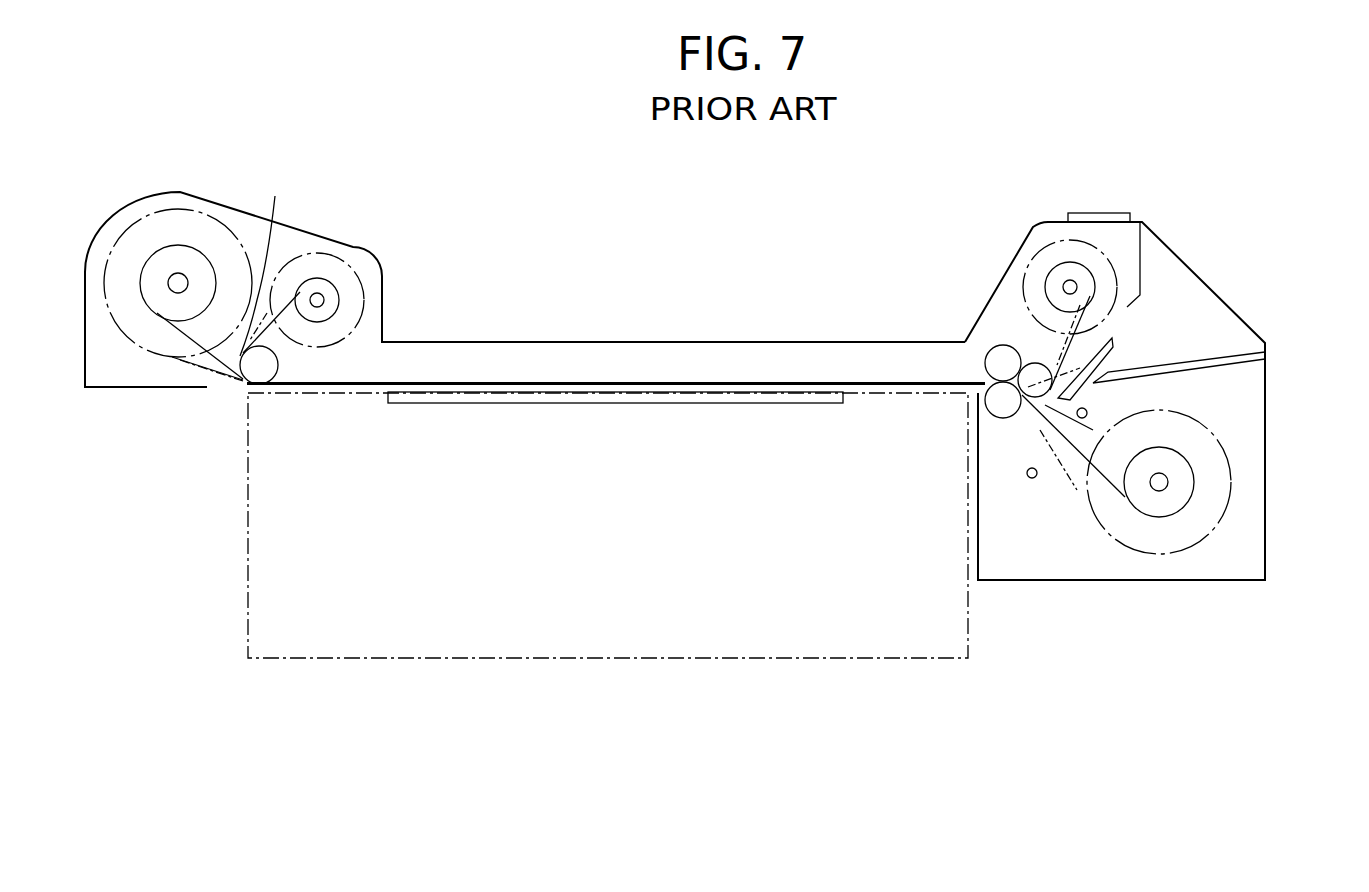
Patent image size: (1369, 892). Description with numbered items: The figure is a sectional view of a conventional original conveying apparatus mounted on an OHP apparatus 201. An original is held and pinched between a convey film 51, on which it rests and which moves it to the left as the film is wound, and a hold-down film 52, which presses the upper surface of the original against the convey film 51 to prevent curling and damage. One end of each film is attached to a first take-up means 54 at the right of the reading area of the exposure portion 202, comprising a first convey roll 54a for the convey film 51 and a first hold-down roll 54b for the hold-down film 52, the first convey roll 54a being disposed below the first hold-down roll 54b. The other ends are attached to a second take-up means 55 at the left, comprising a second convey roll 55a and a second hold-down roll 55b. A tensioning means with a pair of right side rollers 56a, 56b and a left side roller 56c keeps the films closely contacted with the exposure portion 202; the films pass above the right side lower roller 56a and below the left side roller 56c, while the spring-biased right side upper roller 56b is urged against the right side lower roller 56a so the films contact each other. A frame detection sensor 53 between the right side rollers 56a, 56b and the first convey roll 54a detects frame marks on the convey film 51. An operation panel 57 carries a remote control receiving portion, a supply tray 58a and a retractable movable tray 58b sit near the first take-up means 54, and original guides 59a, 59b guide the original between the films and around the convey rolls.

The convey film 51 is at (1070, 458).
The hold-down film 52 is at (1087, 333).
The frame detection sensor 53 is at (1027, 473).
The first take-up means 54 is at (1138, 562).
The first convey roll 54a is at (1183, 481).
The first hold-down roll 54b is at (1053, 278).
The second take-up means 55 is at (125, 362).
The second convey roll 55a is at (187, 262).
The second hold-down roll 55b is at (333, 293).
The right side lower roller 56a is at (998, 405).
The right side upper roller 56b is at (1033, 373).
The left side roller 56c is at (253, 372).
The operation panel 57 is at (1103, 213).
The supply tray 58a is at (1237, 355).
The movable tray 58b is at (1080, 347).
The original guide 59a is at (1093, 425).
The original guide 59b is at (271, 263).
The OHP apparatus 201 is at (810, 643).
The exposure portion 202 is at (765, 397).